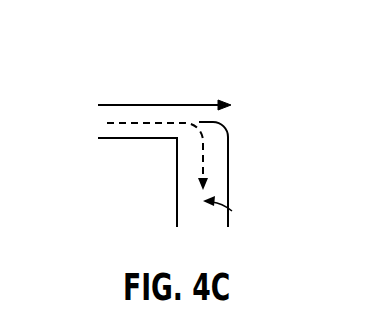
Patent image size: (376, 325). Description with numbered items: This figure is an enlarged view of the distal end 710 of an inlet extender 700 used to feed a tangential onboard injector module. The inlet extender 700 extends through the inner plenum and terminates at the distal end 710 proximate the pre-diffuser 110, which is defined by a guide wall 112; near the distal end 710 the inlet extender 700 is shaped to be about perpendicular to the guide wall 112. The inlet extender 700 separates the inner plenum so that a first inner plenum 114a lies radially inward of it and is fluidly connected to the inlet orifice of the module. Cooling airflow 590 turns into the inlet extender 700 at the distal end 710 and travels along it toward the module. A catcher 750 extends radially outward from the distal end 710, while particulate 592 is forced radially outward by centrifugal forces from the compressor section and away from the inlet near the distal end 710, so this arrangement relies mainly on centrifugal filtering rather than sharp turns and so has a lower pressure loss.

The pre-diffuser 110 is at (131, 100).
The guide wall 112 is at (103, 136).
The cooling airflow 590 is at (148, 123).
The particulate 592 is at (205, 103).
The catcher 750 is at (222, 119).
The distal end 710 is at (228, 137).
The inlet extender 700 is at (228, 170).
The first inner plenum 114a is at (232, 211).